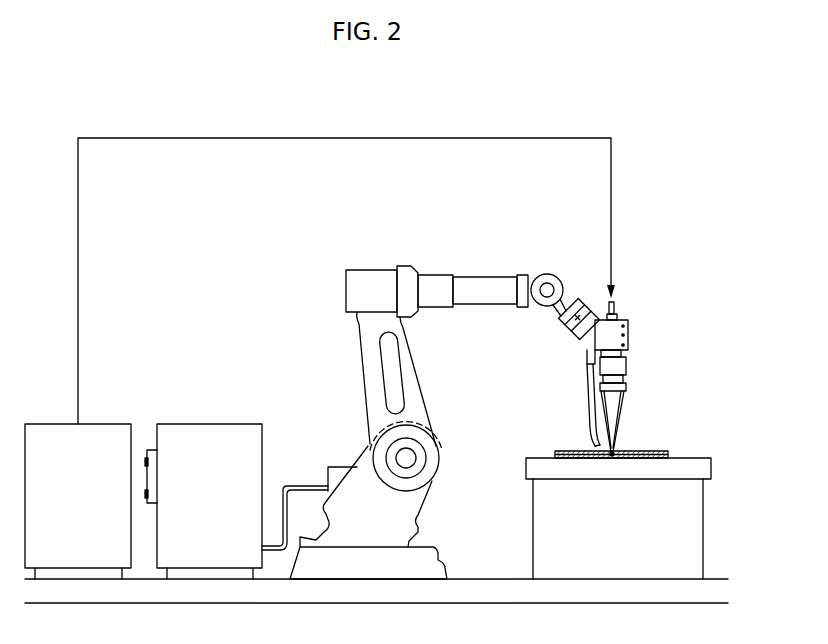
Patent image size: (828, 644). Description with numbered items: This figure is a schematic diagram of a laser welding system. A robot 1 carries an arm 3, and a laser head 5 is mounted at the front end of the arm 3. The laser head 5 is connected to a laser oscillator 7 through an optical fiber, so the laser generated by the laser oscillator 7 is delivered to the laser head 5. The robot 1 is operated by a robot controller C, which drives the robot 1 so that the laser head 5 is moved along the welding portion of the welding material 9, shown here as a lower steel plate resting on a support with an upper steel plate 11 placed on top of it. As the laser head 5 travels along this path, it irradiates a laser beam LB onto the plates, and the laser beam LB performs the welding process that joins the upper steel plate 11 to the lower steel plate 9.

The robot 1 is at (440, 404).
The arm 3 is at (494, 284).
The laser head 5 is at (619, 376).
The laser oscillator 7 is at (116, 424).
The welding material 9 is at (668, 459).
The upper steel plate 11 is at (668, 451).
The robot controller C is at (235, 424).
The laser beam LB is at (624, 404).